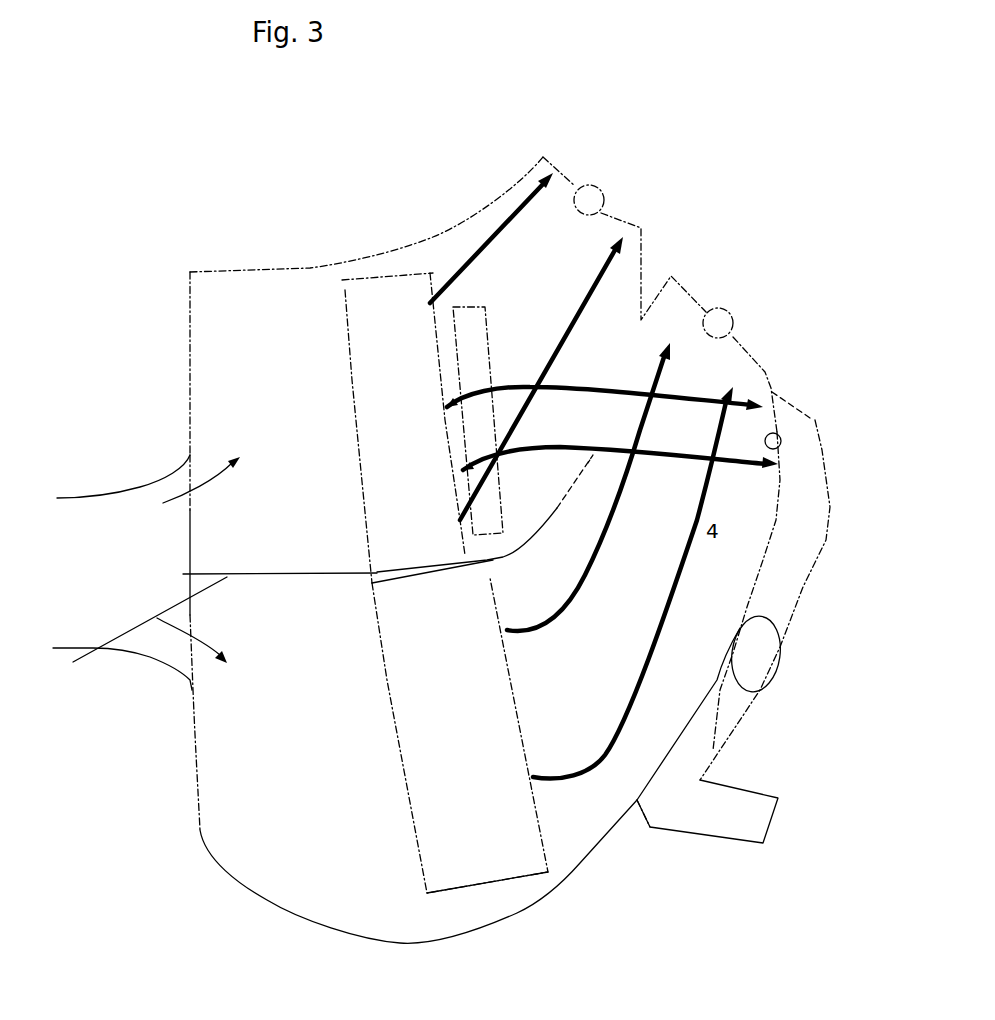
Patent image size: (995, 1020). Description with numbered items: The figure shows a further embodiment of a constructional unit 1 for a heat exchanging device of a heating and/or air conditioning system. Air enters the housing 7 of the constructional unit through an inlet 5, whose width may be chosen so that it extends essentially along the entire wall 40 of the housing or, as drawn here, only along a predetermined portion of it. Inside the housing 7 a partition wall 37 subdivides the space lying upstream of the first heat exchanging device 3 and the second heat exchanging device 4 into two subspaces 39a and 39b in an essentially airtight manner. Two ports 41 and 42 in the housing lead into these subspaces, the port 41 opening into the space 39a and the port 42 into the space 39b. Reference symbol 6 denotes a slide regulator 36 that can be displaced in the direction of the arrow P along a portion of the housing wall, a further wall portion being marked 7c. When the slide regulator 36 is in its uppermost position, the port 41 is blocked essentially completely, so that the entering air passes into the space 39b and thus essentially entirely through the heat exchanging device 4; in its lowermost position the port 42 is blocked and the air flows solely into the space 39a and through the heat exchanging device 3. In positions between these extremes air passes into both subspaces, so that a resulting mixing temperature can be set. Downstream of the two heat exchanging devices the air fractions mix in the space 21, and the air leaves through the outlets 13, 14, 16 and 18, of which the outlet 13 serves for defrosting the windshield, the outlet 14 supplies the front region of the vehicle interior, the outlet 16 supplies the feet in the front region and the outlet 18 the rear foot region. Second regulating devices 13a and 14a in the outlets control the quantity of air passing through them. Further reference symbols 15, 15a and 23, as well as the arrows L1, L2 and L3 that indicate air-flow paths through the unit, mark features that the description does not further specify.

The vehicle front module 1 is at (414, 134).
The first heat exchanging device 3 is at (390, 312).
The second heat exchanging device 4 is at (455, 825).
The inlet 5 is at (100, 570).
The slide regulator 6 is at (478, 305).
The housing 7 is at (310, 268).
The housing wall 7c is at (188, 351).
The defrosting outlet 13 is at (606, 194).
The second regulating device 13a is at (618, 210).
The outlet 14 is at (717, 324).
The second regulating device 14a is at (737, 334).
The fastening point 15 is at (777, 436).
The fastening opening 15a is at (783, 457).
The outlet 16 is at (760, 642).
The outlet 18 is at (715, 800).
The space 21 is at (593, 635).
The outer contour 23 is at (557, 508).
The slide regulator 36 is at (188, 566).
The partition wall 37 is at (139, 634).
The subspace 39a is at (228, 323).
The subspace 39b is at (223, 688).
The housing wall 40 is at (198, 760).
The port 41 is at (192, 490).
The port 42 is at (160, 617).
The arrow P is at (199, 562).
The upper air flow direction L1 is at (214, 467).
The lower air flow direction L2 is at (208, 649).
The air flow direction L3 is at (632, 496).